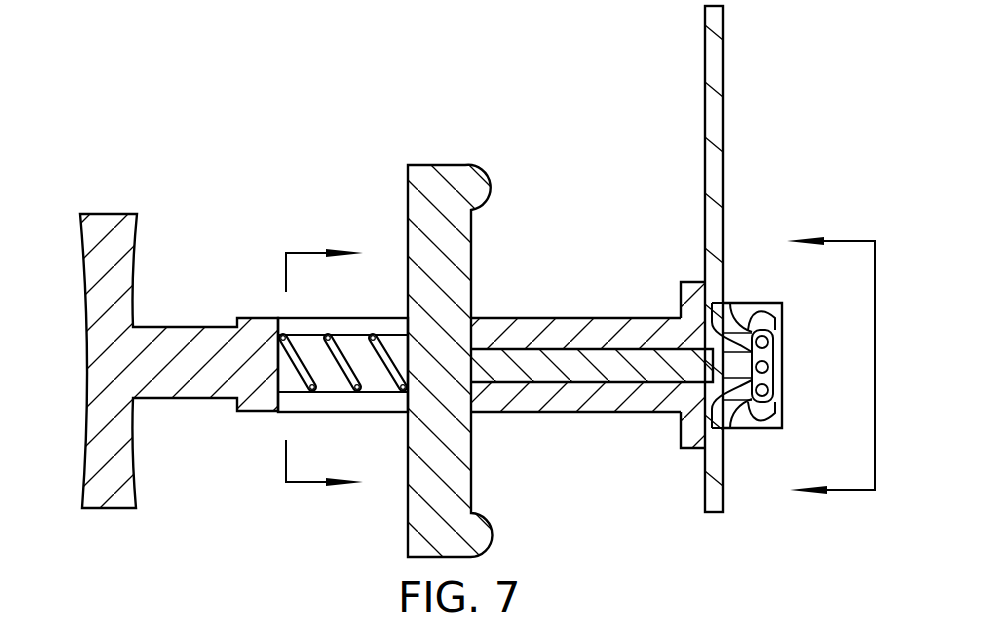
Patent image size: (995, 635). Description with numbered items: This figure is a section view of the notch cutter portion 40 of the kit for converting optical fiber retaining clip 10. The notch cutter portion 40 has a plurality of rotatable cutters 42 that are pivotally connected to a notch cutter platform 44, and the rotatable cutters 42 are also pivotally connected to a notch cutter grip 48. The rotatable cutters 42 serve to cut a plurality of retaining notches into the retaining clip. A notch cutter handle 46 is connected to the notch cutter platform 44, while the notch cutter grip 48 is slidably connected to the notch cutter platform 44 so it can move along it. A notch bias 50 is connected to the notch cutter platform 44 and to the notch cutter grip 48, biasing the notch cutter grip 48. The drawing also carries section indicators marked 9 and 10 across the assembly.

The notch cutter portion 40 is at (368, 100).
The rotatable cutters 42 is at (748, 322).
The notch cutter platform 44 is at (692, 432).
The notch cutter handle 46 is at (98, 498).
The notch cutter grip 48 is at (415, 525).
The notch bias 50 is at (302, 368).
The section line 9- 9 is at (814, 367).
The kit for converting optical fiber retaining clip 10 is at (347, 370).